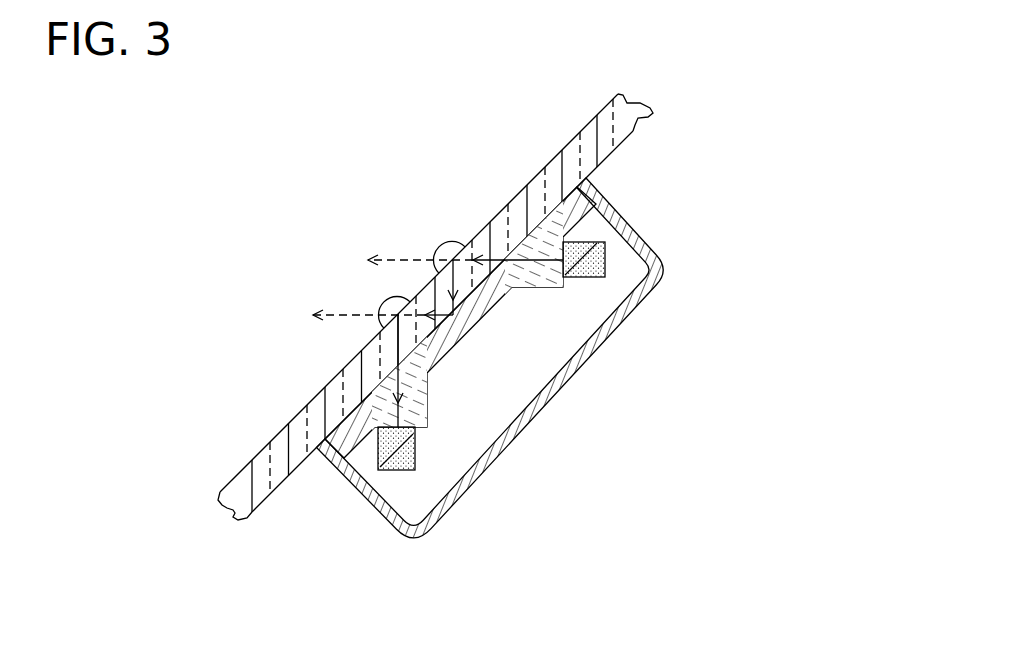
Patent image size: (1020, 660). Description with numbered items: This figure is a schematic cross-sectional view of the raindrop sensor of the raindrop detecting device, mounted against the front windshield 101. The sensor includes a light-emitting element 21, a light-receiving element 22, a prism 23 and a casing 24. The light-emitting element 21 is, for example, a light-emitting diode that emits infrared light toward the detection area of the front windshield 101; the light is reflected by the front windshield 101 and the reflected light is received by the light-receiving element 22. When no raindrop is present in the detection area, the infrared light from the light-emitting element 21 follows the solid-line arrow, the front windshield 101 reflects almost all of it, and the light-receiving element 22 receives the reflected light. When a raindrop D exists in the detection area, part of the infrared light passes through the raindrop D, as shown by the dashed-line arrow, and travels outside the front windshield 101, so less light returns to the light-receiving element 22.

The front windshield 101 is at (566, 142).
The light-emitting element 21 is at (580, 277).
The light-receiving element 22 is at (415, 447).
The prism 23 is at (427, 400).
The casing 24 is at (460, 497).
The raindrop D is at (384, 303).